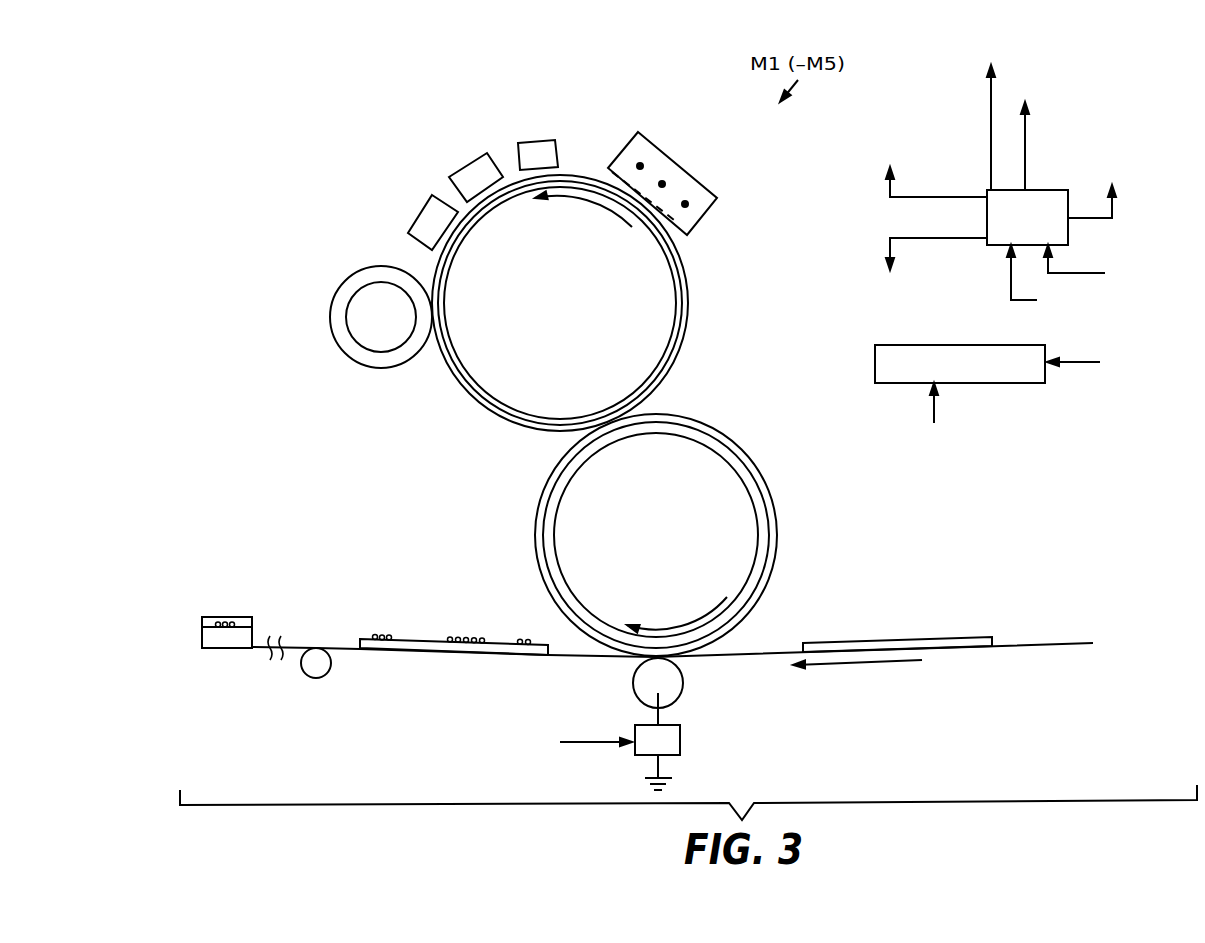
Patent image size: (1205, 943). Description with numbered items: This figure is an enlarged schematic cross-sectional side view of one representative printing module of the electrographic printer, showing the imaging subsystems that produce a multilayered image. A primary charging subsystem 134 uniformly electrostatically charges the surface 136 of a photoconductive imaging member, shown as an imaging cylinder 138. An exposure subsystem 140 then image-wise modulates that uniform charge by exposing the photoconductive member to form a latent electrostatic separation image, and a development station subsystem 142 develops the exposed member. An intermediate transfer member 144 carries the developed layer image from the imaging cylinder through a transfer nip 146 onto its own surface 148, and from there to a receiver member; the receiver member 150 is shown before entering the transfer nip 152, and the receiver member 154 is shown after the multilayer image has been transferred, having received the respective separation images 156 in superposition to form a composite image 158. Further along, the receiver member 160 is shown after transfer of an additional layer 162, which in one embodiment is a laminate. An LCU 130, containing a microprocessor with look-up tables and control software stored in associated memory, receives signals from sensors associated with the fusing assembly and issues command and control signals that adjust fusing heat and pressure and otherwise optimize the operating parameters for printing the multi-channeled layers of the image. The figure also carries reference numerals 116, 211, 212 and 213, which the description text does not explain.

The transport web 116 is at (293, 647).
The logic and control unit (LCU) 130 is at (1070, 240).
The primary charging subsystem 134 is at (684, 151).
The surface of photoconductive imaging member 136 is at (670, 372).
The imaging cylinder 138 is at (697, 323).
The exposure subsystem 140 is at (455, 165).
The development station subsystem 142 is at (330, 317).
The intermediate transfer member 144 is at (805, 491).
The transfer nip 146 is at (595, 423).
The surface of intermediate transfer member 148 is at (782, 538).
The receiver member 150 is at (908, 643).
The transfer nip 152 is at (693, 653).
The receiver member 154 is at (413, 650).
The separation images 156 is at (482, 638).
The composite image 158 is at (242, 623).
The receiver member 160 is at (220, 645).
The additional layer 162 is at (213, 605).
The development station 211 is at (534, 141).
The sensor 212 is at (413, 213).
The exposure light 213 is at (668, 212).